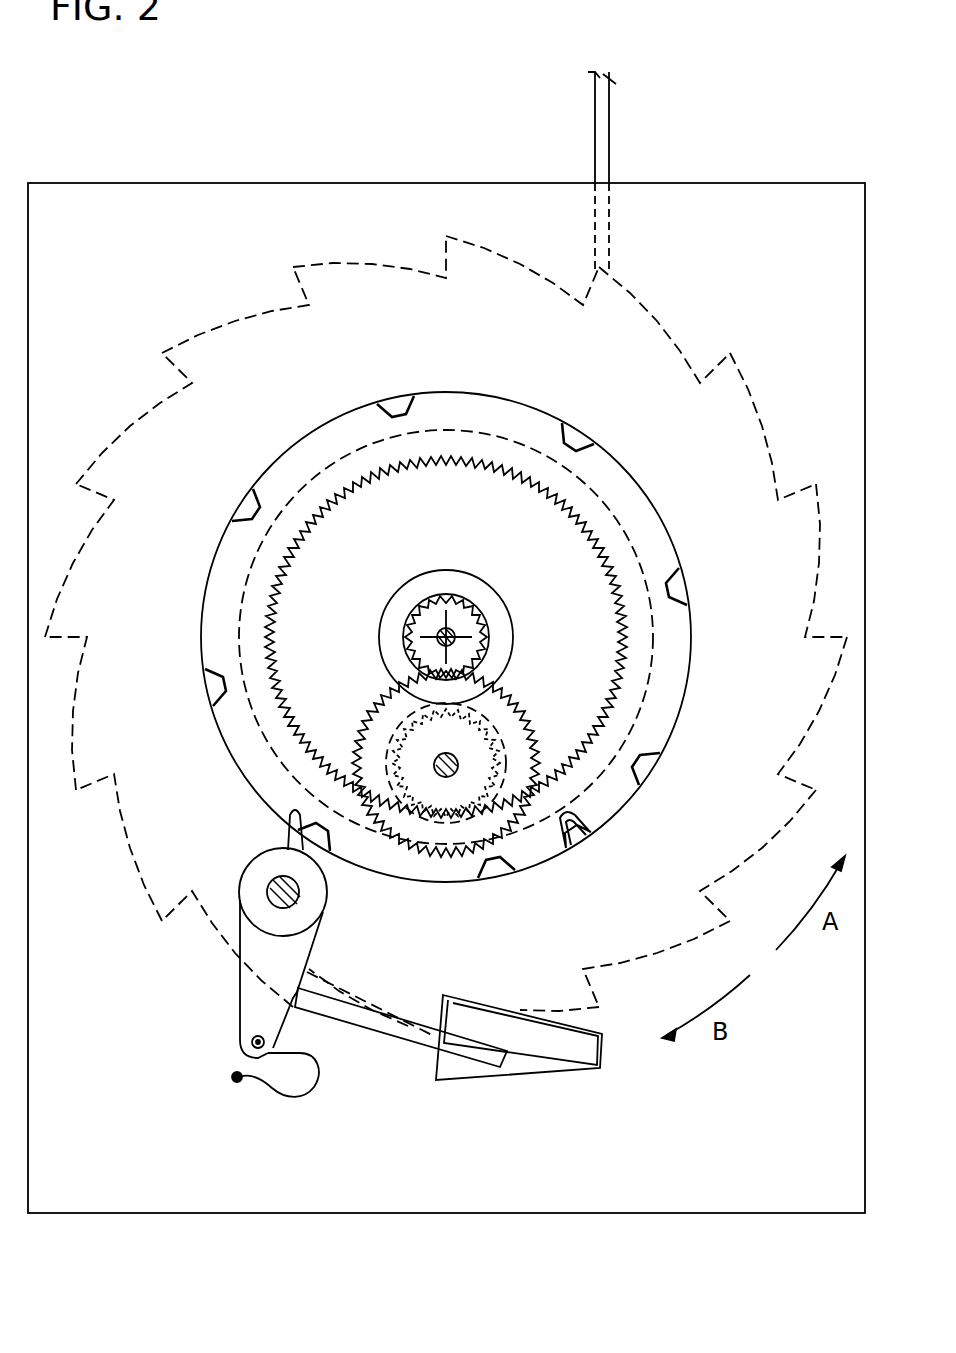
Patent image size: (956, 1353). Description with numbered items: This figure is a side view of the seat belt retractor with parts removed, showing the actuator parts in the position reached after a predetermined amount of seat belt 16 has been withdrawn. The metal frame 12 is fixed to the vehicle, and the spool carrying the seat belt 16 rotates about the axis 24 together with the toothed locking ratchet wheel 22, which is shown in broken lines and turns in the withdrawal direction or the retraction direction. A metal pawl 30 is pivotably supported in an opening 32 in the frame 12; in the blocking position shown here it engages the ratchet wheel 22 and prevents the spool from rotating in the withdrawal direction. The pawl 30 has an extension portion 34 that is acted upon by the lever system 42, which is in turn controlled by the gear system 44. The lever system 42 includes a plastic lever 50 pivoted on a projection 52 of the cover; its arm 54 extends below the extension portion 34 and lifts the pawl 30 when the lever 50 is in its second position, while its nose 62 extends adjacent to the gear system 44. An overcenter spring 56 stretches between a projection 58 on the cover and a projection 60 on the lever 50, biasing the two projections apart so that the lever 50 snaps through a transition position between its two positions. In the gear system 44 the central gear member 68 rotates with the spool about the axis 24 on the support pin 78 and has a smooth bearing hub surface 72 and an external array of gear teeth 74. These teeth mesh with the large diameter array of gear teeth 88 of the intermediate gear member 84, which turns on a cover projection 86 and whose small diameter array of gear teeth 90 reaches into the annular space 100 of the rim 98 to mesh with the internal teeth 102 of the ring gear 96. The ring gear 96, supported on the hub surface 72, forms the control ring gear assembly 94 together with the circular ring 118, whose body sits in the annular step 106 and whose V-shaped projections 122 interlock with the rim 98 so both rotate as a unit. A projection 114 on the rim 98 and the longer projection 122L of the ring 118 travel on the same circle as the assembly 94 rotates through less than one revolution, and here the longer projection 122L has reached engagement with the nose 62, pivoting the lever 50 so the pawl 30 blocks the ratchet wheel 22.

The frame 12 is at (730, 195).
The seat belt 16 is at (597, 128).
The locking ratchet wheel 22 is at (200, 420).
The axis 24 is at (446, 634).
The pawl 30 is at (568, 1050).
The opening 32 is at (530, 1072).
The extension portion 34 is at (485, 1015).
The lever system 42 is at (192, 982).
The gear system 44 is at (338, 382).
The lever 50 is at (265, 870).
The projection 52 is at (300, 893).
The arm 54 is at (360, 1015).
The overcenter spring 56 is at (265, 1085).
The projection 58 is at (233, 1078).
The projection 60 is at (252, 1040).
The nose 62 is at (290, 828).
The central gear member 68 is at (488, 602).
The bearing hub surface 72 is at (415, 620).
The gear teeth 74 is at (468, 628).
The support pin 78 is at (425, 643).
The intermediate gear member 84 is at (467, 752).
The projection 86 is at (450, 764).
The large diameter array of gear teeth 88 is at (482, 716).
The small diameter array of gear teeth 90 is at (410, 760).
The control ring gear assembly 94 is at (648, 492).
The ring gear 96 is at (385, 609).
The rim 98 is at (385, 609).
The annular space 100 is at (385, 637).
The internal teeth 102 is at (446, 637).
The annular step 106 is at (510, 432).
The projection 114 is at (582, 838).
The ring 118 is at (680, 584).
The projections 122 is at (398, 410).
The longer projection 122L is at (330, 845).